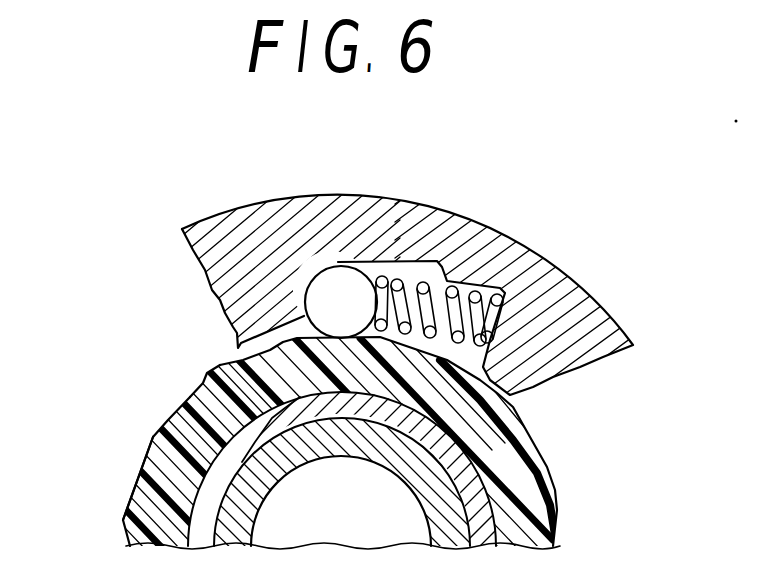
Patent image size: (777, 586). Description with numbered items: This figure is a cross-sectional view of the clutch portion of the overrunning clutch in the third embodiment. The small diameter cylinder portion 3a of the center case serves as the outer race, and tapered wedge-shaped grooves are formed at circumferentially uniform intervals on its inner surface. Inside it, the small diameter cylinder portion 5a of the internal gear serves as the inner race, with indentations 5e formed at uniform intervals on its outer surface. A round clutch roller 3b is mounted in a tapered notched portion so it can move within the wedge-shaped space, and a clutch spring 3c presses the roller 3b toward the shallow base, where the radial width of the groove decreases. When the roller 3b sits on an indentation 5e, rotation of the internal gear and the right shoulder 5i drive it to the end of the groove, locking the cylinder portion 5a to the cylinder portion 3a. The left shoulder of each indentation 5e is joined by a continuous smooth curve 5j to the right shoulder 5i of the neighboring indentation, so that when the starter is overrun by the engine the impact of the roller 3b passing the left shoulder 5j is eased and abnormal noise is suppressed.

The small diameter cylinder portion of the center case 3a is at (436, 228).
The clutch roller 3b is at (343, 287).
The clutch spring 3c is at (465, 282).
The small diameter cylinder portion of the internal gear 5a is at (543, 505).
The indentations 5e is at (200, 388).
The right shoulder of the indentation 5i is at (207, 373).
The continuous smooth curve (left shoulder) 5j is at (187, 418).